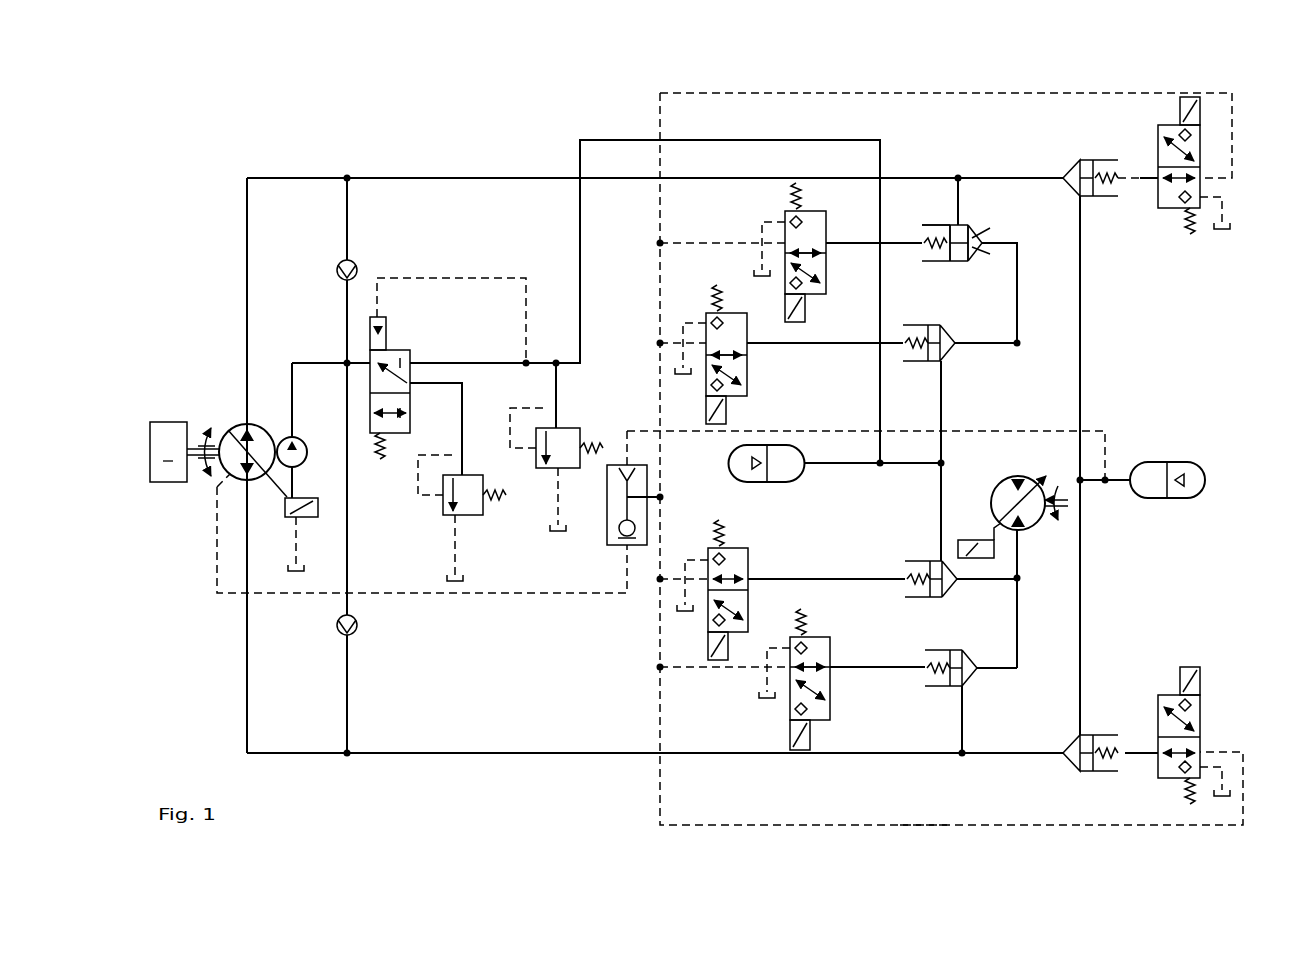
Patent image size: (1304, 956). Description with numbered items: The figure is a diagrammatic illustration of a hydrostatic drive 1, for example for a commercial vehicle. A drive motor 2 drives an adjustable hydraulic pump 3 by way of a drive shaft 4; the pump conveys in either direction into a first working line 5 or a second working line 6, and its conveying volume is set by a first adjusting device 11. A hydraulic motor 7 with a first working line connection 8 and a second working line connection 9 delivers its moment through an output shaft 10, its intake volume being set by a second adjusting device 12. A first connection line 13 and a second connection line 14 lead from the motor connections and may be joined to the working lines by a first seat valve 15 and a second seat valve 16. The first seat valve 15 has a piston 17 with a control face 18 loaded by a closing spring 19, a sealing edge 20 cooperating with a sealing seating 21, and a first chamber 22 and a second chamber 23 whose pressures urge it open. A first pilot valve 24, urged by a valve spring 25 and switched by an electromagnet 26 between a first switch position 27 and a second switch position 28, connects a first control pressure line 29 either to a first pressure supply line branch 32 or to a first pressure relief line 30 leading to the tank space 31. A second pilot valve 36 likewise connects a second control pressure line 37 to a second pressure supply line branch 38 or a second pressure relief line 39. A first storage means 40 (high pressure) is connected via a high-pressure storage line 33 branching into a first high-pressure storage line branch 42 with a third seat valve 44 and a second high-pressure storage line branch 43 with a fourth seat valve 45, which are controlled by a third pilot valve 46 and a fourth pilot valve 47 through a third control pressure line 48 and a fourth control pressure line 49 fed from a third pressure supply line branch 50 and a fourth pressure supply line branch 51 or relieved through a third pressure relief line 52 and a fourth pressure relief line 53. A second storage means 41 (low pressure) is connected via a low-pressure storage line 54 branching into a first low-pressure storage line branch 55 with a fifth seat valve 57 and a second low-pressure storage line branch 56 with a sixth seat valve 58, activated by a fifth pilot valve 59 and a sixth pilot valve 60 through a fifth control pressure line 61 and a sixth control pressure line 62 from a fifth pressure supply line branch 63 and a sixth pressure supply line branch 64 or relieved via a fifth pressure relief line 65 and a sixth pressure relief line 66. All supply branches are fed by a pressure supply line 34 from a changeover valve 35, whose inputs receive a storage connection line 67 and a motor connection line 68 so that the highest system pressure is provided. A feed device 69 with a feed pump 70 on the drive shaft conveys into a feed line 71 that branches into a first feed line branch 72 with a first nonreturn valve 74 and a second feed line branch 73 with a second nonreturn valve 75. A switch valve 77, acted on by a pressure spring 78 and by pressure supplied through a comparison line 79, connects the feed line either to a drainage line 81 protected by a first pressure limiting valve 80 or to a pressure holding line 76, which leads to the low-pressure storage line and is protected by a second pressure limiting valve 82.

The hydrostatic drive 1 is at (200, 176).
The drive motor 2 is at (184, 452).
The hydraulic pump 3 is at (258, 432).
The drive shaft 4 is at (206, 439).
The first working line 5 is at (284, 178).
The second working line 6 is at (297, 753).
The hydraulic motor 7 is at (996, 501).
The first working line connection 8 is at (1014, 477).
The second working line connection 9 is at (1024, 533).
The output shaft 10 is at (1064, 495).
The first adjusting device 11 is at (307, 520).
The second adjusting device 12 is at (976, 540).
The first connection line 13 is at (1020, 291).
The second connection line 14 is at (1020, 626).
The first seat valve 15 is at (925, 212).
The second seat valve 16 is at (930, 702).
The piston 17 is at (962, 228).
The control face 18 is at (944, 225).
The closing spring 19 is at (932, 262).
The sealing edge 20 is at (975, 258).
The sealing seating 21 is at (977, 238).
The first chamber 22 is at (957, 220).
The second chamber 23 is at (978, 244).
The first pilot valve 24 is at (757, 208).
The valve spring 25 is at (803, 196).
The electromagnet 26 is at (806, 319).
The first switch position 27 is at (822, 227).
The second switch position 28 is at (822, 269).
The first control pressure line 29 is at (870, 246).
The first pressure relief line 30 is at (762, 223).
The tank space 31 is at (291, 580).
The first pressure supply line branch 32 is at (682, 243).
The high-pressure storage line 33 is at (1117, 483).
The pressure supply line 34 is at (665, 433).
The changeover valve 35 is at (607, 497).
The second pilot valve 36 is at (778, 742).
The second control pressure line 37 is at (845, 671).
The second pressure supply line branch 38 is at (697, 670).
The second pressure relief line 39 is at (766, 681).
The first storage means 40 is at (1160, 463).
The second storage means 41 is at (775, 484).
The first high-pressure storage line branch 42 is at (1052, 177).
The second high-pressure storage line branch 43 is at (1024, 752).
The third seat valve 44 is at (1106, 158).
The fourth seat valve 45 is at (1060, 776).
The third pilot valve 46 is at (1212, 146).
The fourth pilot valve 47 is at (1143, 785).
The third control pressure line 48 is at (1143, 182).
The fourth control pressure line 49 is at (1143, 752).
The third pressure supply line branch 50 is at (970, 95).
The fourth pressure supply line branch 51 is at (925, 824).
The third pressure relief line 52 is at (1228, 221).
The fourth pressure relief line 53 is at (1222, 776).
The low-pressure storage line 54 is at (845, 466).
The first low-pressure storage line branch 55 is at (975, 346).
The second low-pressure storage line branch 56 is at (941, 497).
The fifth seat valve 57 is at (905, 366).
The sixth seat valve 58 is at (905, 599).
The fifth pilot valve 59 is at (685, 401).
The sixth pilot valve 60 is at (688, 639).
The fifth control pressure line 61 is at (805, 346).
The sixth control pressure line 62 is at (805, 578).
The fifth pressure supply line branch 63 is at (663, 340).
The sixth pressure supply line branch 64 is at (663, 576).
The fifth pressure relief line 65 is at (685, 322).
The sixth pressure relief line 66 is at (686, 558).
The storage connection line 67 is at (622, 458).
The motor connection line 68 is at (520, 596).
The feed device 69 is at (270, 332).
The feed pump 70 is at (305, 448).
The feed line 71 is at (318, 363).
The first feed line branch 72 is at (347, 219).
The second feed line branch 73 is at (350, 691).
The first nonreturn valve 74 is at (337, 268).
The second nonreturn valve 75 is at (357, 628).
The pressure holding line 76 is at (580, 216).
The switch valve 77 is at (386, 452).
The pressure spring 78 is at (378, 462).
The comparison line 79 is at (452, 278).
The first pressure limiting valve 80 is at (470, 522).
The drainage line 81 is at (437, 398).
The second pressure limiting valve 82 is at (561, 428).